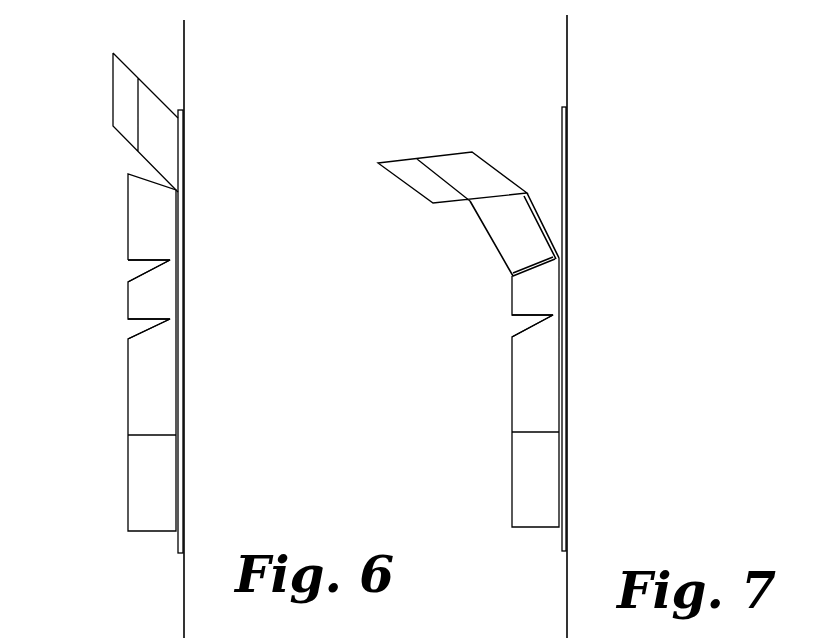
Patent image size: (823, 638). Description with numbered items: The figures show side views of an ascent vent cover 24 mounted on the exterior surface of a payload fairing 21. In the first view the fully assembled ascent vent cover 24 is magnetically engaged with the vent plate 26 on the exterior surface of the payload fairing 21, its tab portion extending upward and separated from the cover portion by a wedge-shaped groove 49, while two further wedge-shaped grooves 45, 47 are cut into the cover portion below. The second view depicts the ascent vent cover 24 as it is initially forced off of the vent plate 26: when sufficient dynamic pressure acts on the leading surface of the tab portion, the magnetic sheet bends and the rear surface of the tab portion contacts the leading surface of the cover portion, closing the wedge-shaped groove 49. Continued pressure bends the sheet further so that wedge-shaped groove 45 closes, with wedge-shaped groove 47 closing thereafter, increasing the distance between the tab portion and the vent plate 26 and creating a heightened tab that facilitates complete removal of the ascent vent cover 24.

In FIG. 6, the payload fairing 21 is at (185, 33).
In FIG. 7, the payload fairing 21 is at (567, 60).
In FIG. 6, the ascent vent cover 24 is at (99, 527).
In FIG. 7, the ascent vent cover 24 is at (492, 483).
In FIG. 6, the vent plate 26 is at (187, 220).
In FIG. 7, the vent plate 26 is at (565, 212).
In FIG. 6, the wedge-shaped groove 45 is at (135, 269).
In FIG. 6, the wedge-shaped groove 47 is at (135, 326).
In FIG. 7, the wedge-shaped groove 47 is at (505, 326).
In FIG. 6, the wedge-shaped groove 49 is at (135, 167).
In FIG. 7, the wedge-shaped groove 49 is at (468, 214).